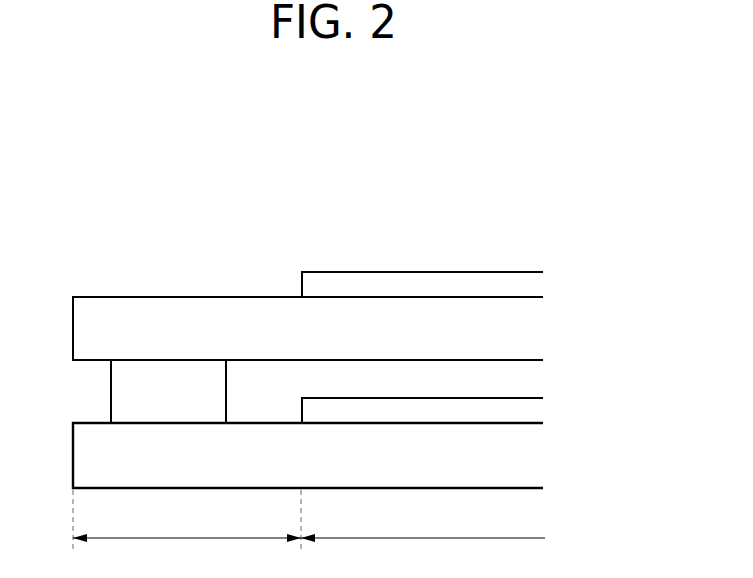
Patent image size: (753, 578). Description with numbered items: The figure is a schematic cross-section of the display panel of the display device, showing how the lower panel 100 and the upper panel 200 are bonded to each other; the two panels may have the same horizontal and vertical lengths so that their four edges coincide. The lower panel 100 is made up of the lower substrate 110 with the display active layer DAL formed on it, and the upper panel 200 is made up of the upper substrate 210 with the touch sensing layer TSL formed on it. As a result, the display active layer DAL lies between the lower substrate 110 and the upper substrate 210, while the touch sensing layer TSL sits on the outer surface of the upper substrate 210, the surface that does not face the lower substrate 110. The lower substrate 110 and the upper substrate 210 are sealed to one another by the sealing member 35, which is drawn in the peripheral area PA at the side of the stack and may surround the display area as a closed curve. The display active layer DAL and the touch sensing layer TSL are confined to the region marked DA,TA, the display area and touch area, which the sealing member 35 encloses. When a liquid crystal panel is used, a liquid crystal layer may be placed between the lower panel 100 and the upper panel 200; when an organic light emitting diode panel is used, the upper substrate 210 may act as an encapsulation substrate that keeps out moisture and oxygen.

The touch sensing layer TSL is at (523, 284).
The upper substrate 210 is at (523, 331).
The sealing member 35 is at (128, 392).
The display active layer DAL is at (523, 411).
The lower substrate 110 is at (523, 457).
The upper panel 200 is at (613, 272).
The lower panel 100 is at (613, 400).
The peripheral area PA is at (187, 532).
The display area, touch area DA,TA is at (423, 553).